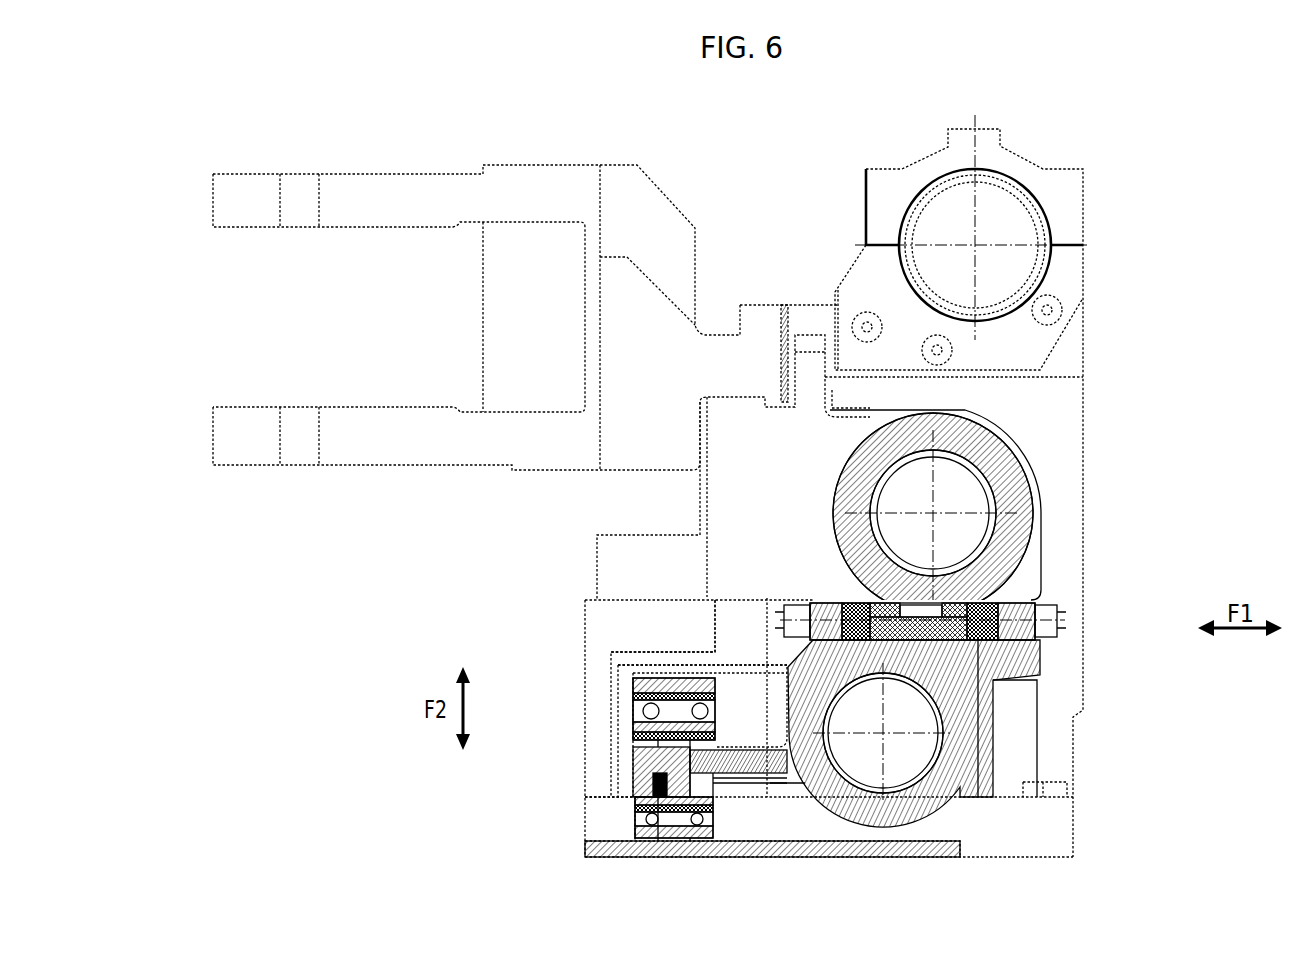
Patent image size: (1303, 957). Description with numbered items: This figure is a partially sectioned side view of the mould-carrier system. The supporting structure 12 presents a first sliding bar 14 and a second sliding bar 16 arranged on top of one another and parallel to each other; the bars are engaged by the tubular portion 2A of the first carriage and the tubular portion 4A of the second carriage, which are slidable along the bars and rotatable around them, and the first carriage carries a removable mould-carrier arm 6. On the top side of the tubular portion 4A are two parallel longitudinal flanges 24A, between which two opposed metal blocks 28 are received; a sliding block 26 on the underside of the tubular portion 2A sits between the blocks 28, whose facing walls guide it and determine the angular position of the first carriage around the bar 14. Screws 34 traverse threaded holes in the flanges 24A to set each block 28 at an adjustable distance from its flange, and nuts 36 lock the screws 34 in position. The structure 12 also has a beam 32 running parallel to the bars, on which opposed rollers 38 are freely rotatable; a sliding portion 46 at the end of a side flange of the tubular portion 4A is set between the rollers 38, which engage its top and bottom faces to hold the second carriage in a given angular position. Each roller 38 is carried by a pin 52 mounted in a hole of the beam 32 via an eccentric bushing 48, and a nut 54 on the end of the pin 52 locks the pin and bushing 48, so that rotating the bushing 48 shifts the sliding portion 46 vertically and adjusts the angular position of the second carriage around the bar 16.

The mould-carrier arm 6 is at (403, 447).
The tubular portion of the first carriage 2A is at (1027, 440).
The first sliding bar 14 is at (967, 533).
The tubular portion of the second carriage 4A is at (975, 752).
The second sliding bar 16 is at (907, 765).
The longitudinal flange 24A is at (820, 600).
The sliding block 26 is at (953, 640).
The metal block 28 is at (853, 600).
The screw 34 is at (1060, 606).
The nut 36 is at (1047, 635).
The supporting structure 12 is at (607, 856).
The roller 38 is at (697, 665).
The nut 54 is at (633, 687).
The pin 52 is at (630, 720).
The eccentric bushing 48 is at (647, 743).
The beam 32 is at (655, 790).
The sliding portion 46 is at (743, 738).